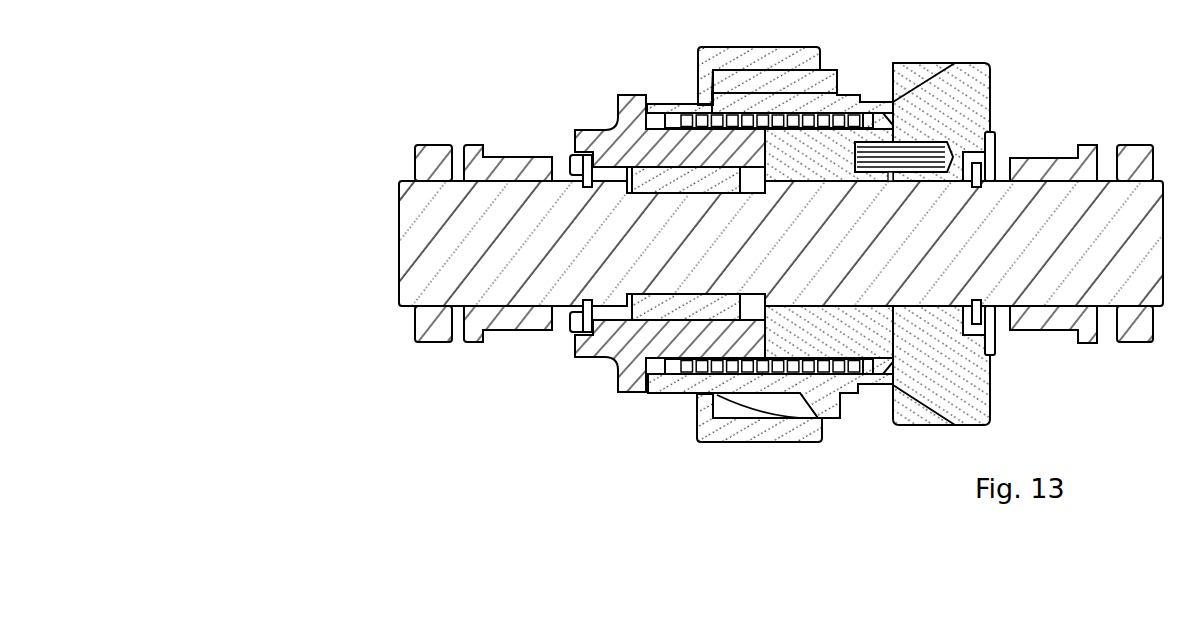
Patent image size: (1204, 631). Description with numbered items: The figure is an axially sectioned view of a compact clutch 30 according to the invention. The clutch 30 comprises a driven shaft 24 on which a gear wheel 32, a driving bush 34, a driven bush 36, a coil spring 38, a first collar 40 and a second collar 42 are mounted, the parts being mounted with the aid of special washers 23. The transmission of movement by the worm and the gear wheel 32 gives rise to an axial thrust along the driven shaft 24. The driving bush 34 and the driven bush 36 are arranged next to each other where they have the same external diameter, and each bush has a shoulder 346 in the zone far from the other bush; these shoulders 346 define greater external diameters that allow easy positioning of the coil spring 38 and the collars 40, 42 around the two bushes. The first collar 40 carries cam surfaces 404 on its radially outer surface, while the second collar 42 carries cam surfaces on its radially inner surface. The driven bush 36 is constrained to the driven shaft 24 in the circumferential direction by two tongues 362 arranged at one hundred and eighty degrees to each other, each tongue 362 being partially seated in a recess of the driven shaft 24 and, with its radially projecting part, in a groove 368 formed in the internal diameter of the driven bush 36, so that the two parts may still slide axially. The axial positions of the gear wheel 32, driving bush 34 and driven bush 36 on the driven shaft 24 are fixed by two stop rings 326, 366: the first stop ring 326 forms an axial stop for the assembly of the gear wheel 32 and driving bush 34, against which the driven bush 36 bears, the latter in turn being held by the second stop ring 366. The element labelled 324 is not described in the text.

The clutch 30 is at (428, 66).
The driven shaft 24 is at (412, 268).
The special washers 23 is at (992, 157).
The gear wheel 32 is at (978, 98).
The driving bush 34 is at (870, 343).
The driven bush 36 is at (601, 348).
The coil spring 38 is at (842, 110).
The first collar 40 is at (770, 103).
The second collar 42 is at (717, 53).
The pin 324 is at (915, 148).
The first stop ring 326 is at (977, 312).
The shoulder 346 is at (643, 103).
The tongue 362 is at (648, 310).
The second stop ring 366 is at (572, 170).
The groove 368 is at (606, 165).
The cam surfaces 404 is at (770, 403).